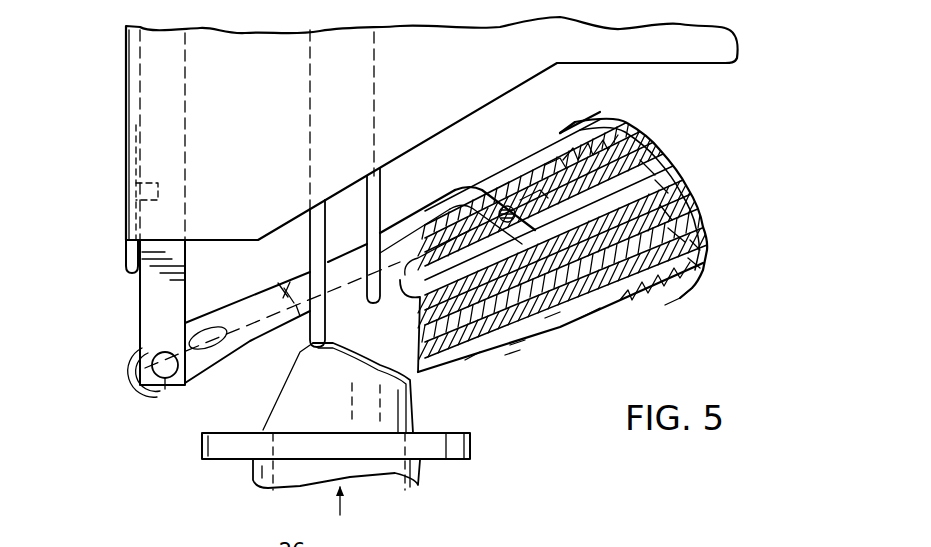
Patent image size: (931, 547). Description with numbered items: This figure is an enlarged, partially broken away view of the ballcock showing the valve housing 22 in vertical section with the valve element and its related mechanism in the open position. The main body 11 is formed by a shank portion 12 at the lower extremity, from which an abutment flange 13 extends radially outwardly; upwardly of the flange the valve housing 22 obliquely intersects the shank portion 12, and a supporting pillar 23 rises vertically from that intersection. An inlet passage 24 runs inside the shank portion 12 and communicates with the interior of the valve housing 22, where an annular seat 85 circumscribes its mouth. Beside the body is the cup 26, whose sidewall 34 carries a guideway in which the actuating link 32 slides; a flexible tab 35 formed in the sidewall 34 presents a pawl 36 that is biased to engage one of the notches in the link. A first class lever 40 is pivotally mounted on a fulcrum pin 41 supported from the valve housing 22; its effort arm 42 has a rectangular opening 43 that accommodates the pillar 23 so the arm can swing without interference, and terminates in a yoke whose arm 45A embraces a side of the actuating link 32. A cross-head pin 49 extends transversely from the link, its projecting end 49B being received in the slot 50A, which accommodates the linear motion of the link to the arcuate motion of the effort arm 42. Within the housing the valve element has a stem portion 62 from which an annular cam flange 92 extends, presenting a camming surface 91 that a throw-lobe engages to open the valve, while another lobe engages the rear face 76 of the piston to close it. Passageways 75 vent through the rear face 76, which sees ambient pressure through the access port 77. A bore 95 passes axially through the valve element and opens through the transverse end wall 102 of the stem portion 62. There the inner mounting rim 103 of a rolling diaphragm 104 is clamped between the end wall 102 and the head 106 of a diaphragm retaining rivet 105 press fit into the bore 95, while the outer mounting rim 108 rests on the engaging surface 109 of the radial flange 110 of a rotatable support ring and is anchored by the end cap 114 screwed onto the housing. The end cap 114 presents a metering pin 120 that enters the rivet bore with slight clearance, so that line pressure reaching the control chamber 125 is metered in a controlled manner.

The main body 11 is at (420, 407).
The shank portion 12 is at (428, 472).
The abutment flange 13 is at (200, 452).
The valve housing 22 is at (584, 326).
The supporting pillar 23 is at (380, 188).
The inlet passage 24 is at (392, 483).
The cup 26 is at (740, 44).
The actuating link 32 is at (190, 268).
The sidewall 34 is at (125, 48).
The flexible tab 35 is at (127, 268).
The pawl 36 is at (134, 190).
The first class lever 40 is at (236, 358).
The fulcrum pin 41 is at (505, 206).
The effort arm 42 is at (257, 340).
The rectangular opening 43 is at (290, 290).
The yoke arm 45A is at (130, 372).
The pin 49 is at (156, 357).
The projecting end 49B is at (166, 380).
The slot 50A is at (207, 322).
The stem portion 62 is at (472, 224).
The passageways 75 is at (516, 362).
The rear face 76 is at (553, 320).
The access port 77 is at (534, 192).
The annular seat 85 is at (478, 358).
The camming surface 91 is at (584, 310).
The annular cam flange 92 is at (553, 162).
The bore 95 is at (522, 352).
The transverse end wall 102 is at (650, 170).
The inner mounting rim 103 is at (662, 185).
The rolling diaphragm 104 is at (640, 145).
The diaphragm retaining rivet 105 is at (648, 310).
The head 106 is at (672, 212).
The outer mounting rim 108 is at (700, 266).
The engaging surface 109 is at (705, 244).
The radial flange 110 is at (705, 285).
The end cap 114 is at (628, 115).
The metering pin 120 is at (690, 182).
The control chamber 125 is at (683, 237).